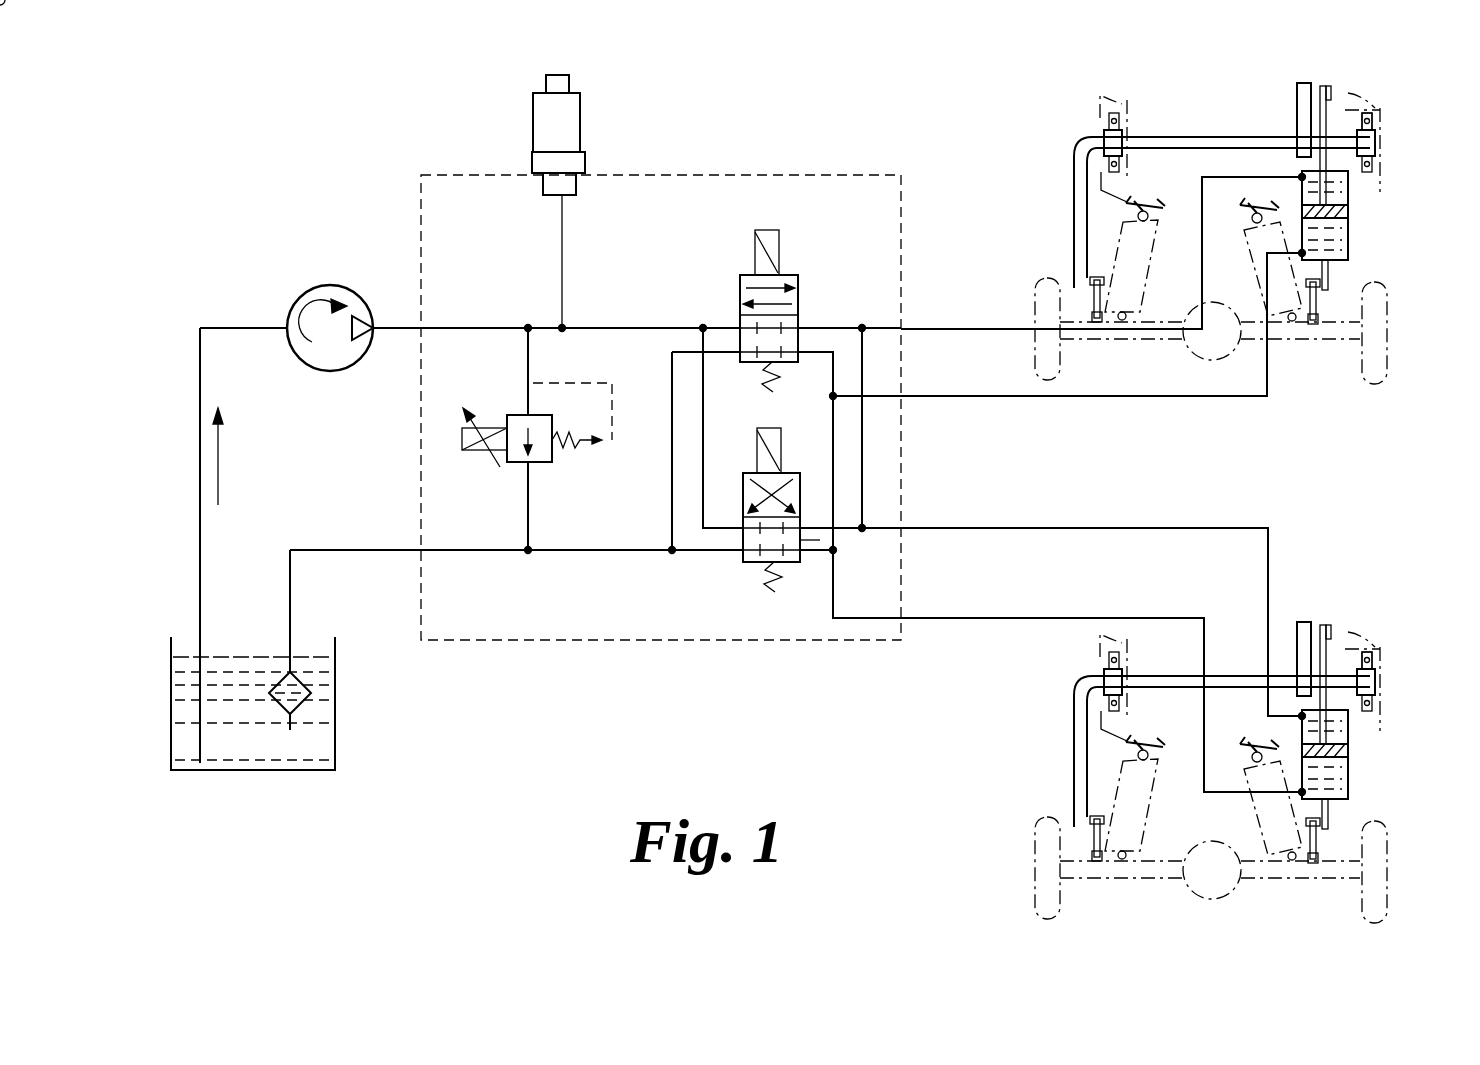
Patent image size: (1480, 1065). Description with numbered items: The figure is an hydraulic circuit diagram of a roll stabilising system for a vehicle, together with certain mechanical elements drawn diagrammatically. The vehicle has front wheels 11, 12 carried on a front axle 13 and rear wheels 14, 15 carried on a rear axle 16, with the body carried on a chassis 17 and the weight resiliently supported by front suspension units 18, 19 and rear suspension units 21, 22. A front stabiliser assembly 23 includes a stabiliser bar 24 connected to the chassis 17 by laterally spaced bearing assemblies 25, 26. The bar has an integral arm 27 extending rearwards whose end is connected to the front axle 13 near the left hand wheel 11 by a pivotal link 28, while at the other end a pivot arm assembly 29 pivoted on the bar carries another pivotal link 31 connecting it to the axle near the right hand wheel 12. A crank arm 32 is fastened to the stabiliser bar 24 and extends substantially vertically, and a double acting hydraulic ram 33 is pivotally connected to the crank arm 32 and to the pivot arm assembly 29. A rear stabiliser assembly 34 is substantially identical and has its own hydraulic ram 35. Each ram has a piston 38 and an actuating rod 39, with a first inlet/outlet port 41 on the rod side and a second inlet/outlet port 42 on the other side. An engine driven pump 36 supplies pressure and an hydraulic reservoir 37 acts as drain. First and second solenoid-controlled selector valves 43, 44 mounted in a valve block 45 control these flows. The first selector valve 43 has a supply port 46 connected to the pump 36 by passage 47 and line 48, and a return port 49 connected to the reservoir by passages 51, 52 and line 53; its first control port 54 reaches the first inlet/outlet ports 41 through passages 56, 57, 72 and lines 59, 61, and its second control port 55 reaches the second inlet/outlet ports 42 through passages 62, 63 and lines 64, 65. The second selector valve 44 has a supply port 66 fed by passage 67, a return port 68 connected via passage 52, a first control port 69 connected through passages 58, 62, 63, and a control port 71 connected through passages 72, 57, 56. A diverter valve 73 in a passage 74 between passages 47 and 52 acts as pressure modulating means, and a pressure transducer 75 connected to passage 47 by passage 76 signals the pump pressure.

The front wheel 11 is at (1050, 386).
The front wheel 12 is at (1380, 362).
The front axle 13 is at (1300, 342).
The rear wheel 14 is at (1062, 905).
The rear wheel 15 is at (1387, 905).
The rear axle 16 is at (1272, 875).
The chassis 17 is at (1148, 204).
The front suspension unit 18 is at (1118, 240).
The front suspension unit 19 is at (1250, 271).
The rear suspension unit 21 is at (1150, 810).
The rear suspension unit 22 is at (1265, 800).
The front stabiliser assembly 23 is at (1185, 130).
The stabiliser bar 24 is at (1228, 137).
The bearing assembly 25 is at (1110, 125).
The bearing assembly 26 is at (1380, 135).
The arm 27 is at (1073, 190).
The pivotal link 28 is at (1090, 298).
The pivot arm assembly 29 is at (1378, 293).
The pivotal link 31 is at (1318, 308).
The crank arm 32 is at (1312, 90).
The hydraulic ram 33 is at (1348, 230).
The rear stabiliser assembly 34 is at (1226, 650).
The hydraulic ram 35 is at (1348, 776).
The pump 36 is at (330, 286).
The hydraulic reservoir 37 is at (325, 742).
The piston 38 is at (1348, 210).
The actuating rod 39 is at (1372, 114).
The first inlet/outlet port 41 is at (1300, 177).
The second inlet/outlet port 42 is at (1308, 254).
The first selector valve 43 is at (800, 290).
The second selector valve 44 is at (800, 480).
The valve block 45 is at (735, 175).
The supply port 46 is at (740, 328).
The passage 47 is at (465, 328).
The line 48 is at (400, 330).
The return port 49 is at (740, 355).
The passage 51 is at (672, 475).
The passage 52 is at (583, 550).
The line 53 is at (357, 549).
The first control port 54 is at (800, 328).
The second control port 55 is at (800, 355).
The passage 56 is at (862, 328).
The passage 57 is at (865, 498).
The passage 58 is at (822, 562).
The line 59 is at (950, 328).
The line 61 is at (1078, 528).
The passage 62 is at (840, 422).
The passage 63 is at (880, 396).
The line 64 is at (1180, 398).
The line 65 is at (1048, 618).
The supply port 66 is at (742, 530).
The passage 67 is at (706, 470).
The return port 68 is at (745, 550).
The first control port 69 is at (810, 565).
The control port 71 is at (803, 527).
The passage 72 is at (818, 545).
The diverter valve 73 is at (548, 462).
The passage 74 is at (528, 505).
The pressure transducer 75 is at (580, 122).
The passage 76 is at (562, 255).